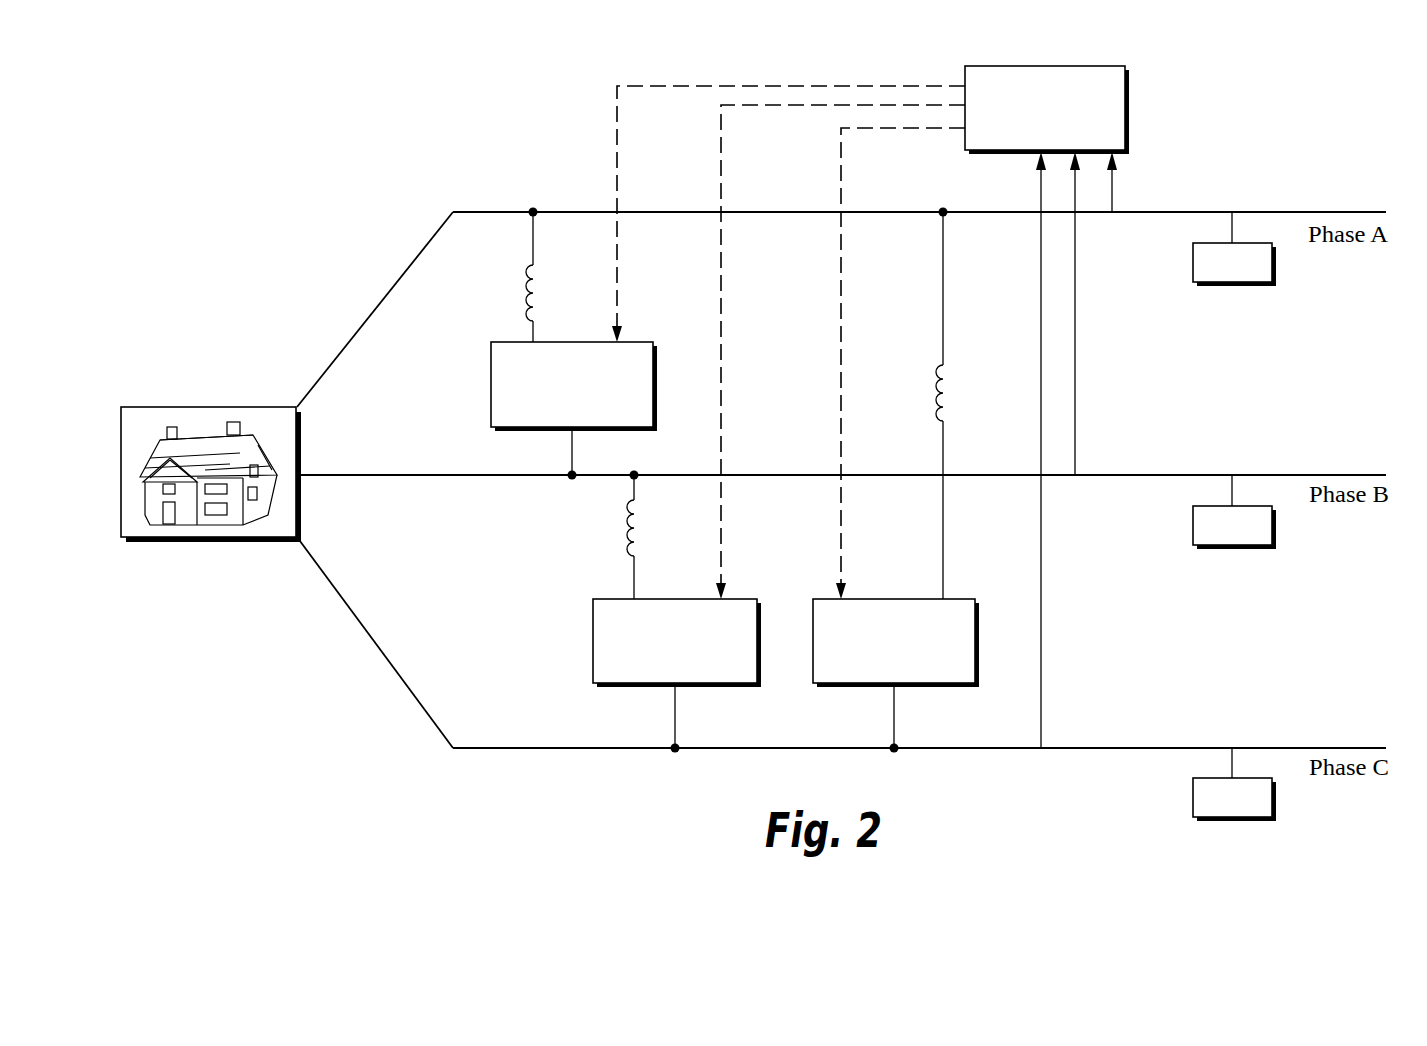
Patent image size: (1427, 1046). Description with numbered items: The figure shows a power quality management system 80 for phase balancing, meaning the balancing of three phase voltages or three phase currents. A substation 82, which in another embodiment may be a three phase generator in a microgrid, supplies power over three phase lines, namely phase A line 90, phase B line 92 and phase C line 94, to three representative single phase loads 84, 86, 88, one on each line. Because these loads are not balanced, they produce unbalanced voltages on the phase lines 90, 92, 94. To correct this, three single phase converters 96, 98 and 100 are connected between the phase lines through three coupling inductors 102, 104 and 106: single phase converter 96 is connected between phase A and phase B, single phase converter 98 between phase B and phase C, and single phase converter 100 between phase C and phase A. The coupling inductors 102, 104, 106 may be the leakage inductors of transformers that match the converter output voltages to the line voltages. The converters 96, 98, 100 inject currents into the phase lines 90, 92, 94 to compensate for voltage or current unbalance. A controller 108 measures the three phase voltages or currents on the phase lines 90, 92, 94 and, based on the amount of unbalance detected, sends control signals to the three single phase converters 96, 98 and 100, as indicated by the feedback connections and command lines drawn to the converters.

The power quality management system 80 is at (244, 153).
The substation 82 is at (165, 407).
The single phase load 84 is at (1193, 265).
The single phase load 86 is at (1193, 528).
The single phase load 88 is at (1193, 800).
The phase A line 90 is at (1294, 213).
The phase B line 92 is at (1314, 479).
The phase C line 94 is at (1316, 752).
The single phase converter 96 is at (653, 342).
The single phase converter 98 is at (758, 598).
The single phase converter 100 is at (978, 600).
The coupling inductor 102 is at (530, 280).
The coupling inductor 104 is at (632, 525).
The coupling inductor 106 is at (939, 386).
The controller 108 is at (1129, 105).